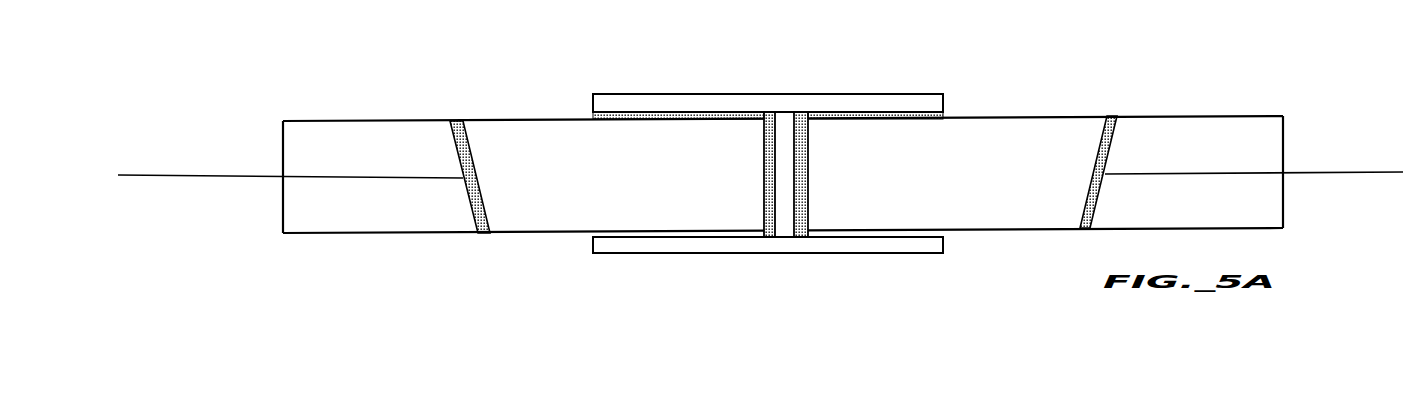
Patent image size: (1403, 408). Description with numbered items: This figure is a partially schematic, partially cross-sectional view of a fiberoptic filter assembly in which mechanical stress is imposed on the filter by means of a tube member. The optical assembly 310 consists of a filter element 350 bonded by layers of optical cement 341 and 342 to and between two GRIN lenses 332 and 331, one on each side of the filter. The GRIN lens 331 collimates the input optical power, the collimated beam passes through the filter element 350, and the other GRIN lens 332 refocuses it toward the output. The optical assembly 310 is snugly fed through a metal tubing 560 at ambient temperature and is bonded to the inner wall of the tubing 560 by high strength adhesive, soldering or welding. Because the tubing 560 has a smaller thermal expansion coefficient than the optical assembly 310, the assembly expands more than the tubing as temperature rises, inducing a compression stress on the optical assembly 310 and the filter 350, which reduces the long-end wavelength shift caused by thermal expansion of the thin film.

The optical assembly 310 is at (783, 164).
The GRIN lens 331 is at (1007, 117).
The GRIN lens 332 is at (557, 119).
The optical cement 341 is at (767, 240).
The optical cement 342 is at (803, 240).
The filter element 350 is at (755, 143).
The metal tubing 560 is at (862, 94).